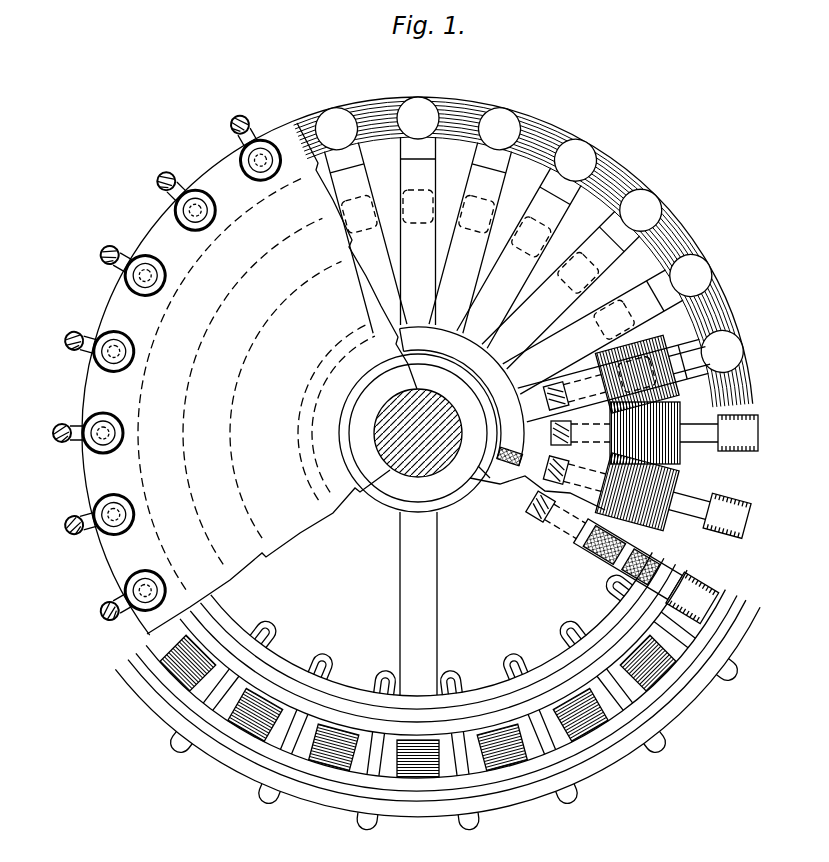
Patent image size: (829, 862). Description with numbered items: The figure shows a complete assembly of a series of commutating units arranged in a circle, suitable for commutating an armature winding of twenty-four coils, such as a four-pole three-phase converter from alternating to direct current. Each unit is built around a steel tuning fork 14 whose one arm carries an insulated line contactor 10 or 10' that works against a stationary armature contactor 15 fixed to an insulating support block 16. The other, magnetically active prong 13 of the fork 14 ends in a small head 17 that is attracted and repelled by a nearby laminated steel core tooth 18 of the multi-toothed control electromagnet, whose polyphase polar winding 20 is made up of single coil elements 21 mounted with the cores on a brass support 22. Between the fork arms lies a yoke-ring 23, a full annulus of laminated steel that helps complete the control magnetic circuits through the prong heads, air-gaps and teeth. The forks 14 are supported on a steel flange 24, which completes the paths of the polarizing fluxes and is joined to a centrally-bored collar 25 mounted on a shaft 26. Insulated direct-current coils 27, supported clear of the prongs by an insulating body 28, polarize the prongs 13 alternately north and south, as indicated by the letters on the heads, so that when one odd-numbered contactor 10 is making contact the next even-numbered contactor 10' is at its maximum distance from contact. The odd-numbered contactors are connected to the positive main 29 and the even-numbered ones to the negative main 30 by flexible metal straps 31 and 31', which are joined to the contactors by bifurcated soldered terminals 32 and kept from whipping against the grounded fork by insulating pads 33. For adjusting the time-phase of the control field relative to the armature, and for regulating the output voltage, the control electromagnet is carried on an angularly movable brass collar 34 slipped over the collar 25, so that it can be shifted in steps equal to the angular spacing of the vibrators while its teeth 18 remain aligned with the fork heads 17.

The line contactor 10 is at (592, 224).
The even-numbered line contactor 10' is at (418, 115).
The magnetically active prong 13 is at (672, 364).
The tuning fork 14 is at (544, 440).
The stationary armature contactor 15 is at (218, 204).
The insulating support block 16 is at (148, 234).
The head 17 is at (757, 438).
The core tooth 18 is at (268, 707).
The control electromagnet winding 20 is at (666, 759).
The coil element 21 is at (212, 756).
The brass support 22 is at (400, 599).
The yoke-ring 23 is at (390, 102).
The steel flange 24 is at (526, 500).
The collar 25 is at (458, 512).
The shaft 26 is at (484, 486).
The polarizing coil 27 is at (670, 388).
The insulating body 28 is at (575, 548).
The positive main 29 is at (516, 421).
The negative main 30 is at (506, 382).
The flexible metal strap 31 is at (555, 279).
The flexible metal strap 31' is at (452, 246).
The bifurcated soldered terminal 32 is at (437, 156).
The insulating pad 33 is at (446, 200).
The angularly movable collar 34 is at (388, 516).